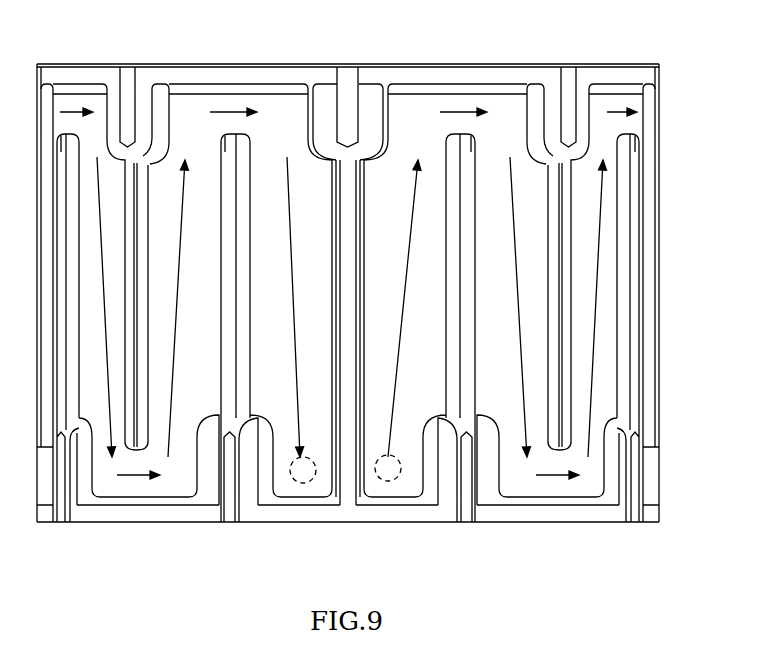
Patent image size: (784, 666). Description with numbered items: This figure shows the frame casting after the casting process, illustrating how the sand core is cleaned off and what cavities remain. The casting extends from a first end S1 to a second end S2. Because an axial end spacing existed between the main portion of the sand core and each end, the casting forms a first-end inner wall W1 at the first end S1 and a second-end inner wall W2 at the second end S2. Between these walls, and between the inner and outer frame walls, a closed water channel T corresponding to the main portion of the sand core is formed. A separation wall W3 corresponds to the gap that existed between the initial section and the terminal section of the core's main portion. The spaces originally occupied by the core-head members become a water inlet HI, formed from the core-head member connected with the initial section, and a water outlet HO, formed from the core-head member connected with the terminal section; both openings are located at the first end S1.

The first end S1 is at (692, 508).
The second end S2 is at (692, 83).
The first-end inner wall W1 is at (526, 510).
The second-end inner wall W2 is at (218, 76).
The separation wall W3 is at (350, 197).
The closed water channel T is at (453, 93).
The water outlet HO is at (302, 483).
The water inlet HI is at (388, 481).